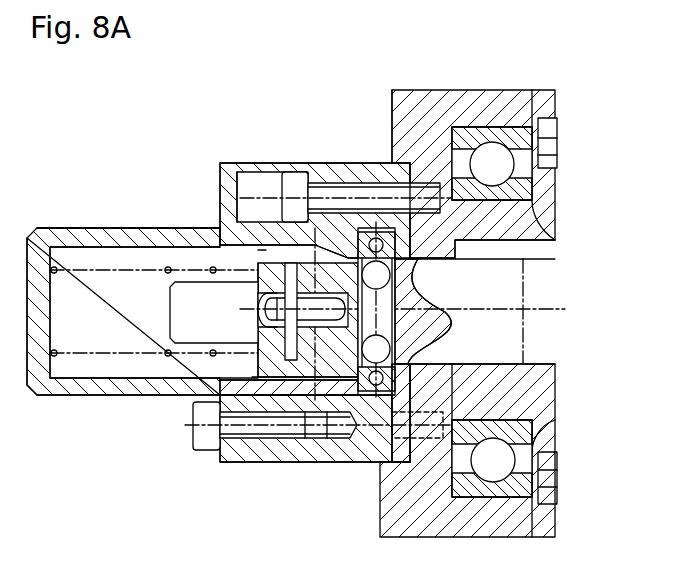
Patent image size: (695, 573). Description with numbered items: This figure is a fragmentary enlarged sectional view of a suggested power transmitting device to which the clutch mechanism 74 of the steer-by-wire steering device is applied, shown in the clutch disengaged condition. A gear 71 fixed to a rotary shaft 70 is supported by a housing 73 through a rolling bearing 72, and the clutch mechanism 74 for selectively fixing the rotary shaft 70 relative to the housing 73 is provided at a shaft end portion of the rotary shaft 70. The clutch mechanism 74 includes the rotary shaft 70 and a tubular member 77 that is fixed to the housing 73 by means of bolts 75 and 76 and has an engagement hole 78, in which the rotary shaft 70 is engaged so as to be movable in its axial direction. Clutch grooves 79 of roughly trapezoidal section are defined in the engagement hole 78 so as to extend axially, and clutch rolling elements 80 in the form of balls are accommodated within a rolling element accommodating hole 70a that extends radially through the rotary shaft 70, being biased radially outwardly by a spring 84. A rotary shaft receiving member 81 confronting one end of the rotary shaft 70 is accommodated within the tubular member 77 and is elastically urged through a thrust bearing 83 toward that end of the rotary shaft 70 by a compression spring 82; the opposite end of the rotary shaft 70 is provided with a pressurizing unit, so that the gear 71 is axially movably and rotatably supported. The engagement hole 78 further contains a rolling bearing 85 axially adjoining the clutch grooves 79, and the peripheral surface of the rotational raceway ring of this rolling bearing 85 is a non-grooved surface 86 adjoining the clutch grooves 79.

The rotary shaft 70 is at (512, 352).
The rolling element accommodating hole 70a is at (386, 326).
The gear 71 is at (546, 118).
The rolling bearing 72 is at (500, 127).
The housing 73 is at (391, 118).
The clutch mechanism 74 is at (343, 228).
The bolt 75 is at (369, 192).
The bolt 76 is at (284, 440).
The tubular member 77 is at (157, 226).
The engagement hole 78 is at (197, 268).
The clutch grooves 79 is at (255, 255).
The clutch rolling elements 80 is at (285, 382).
The rotary shaft receiving member 81 is at (207, 325).
The compression spring 82 is at (95, 270).
The thrust bearing 83 is at (223, 384).
The spring 84 is at (390, 298).
The rolling bearing 85 is at (388, 385).
The non-grooved surface 86 is at (395, 275).